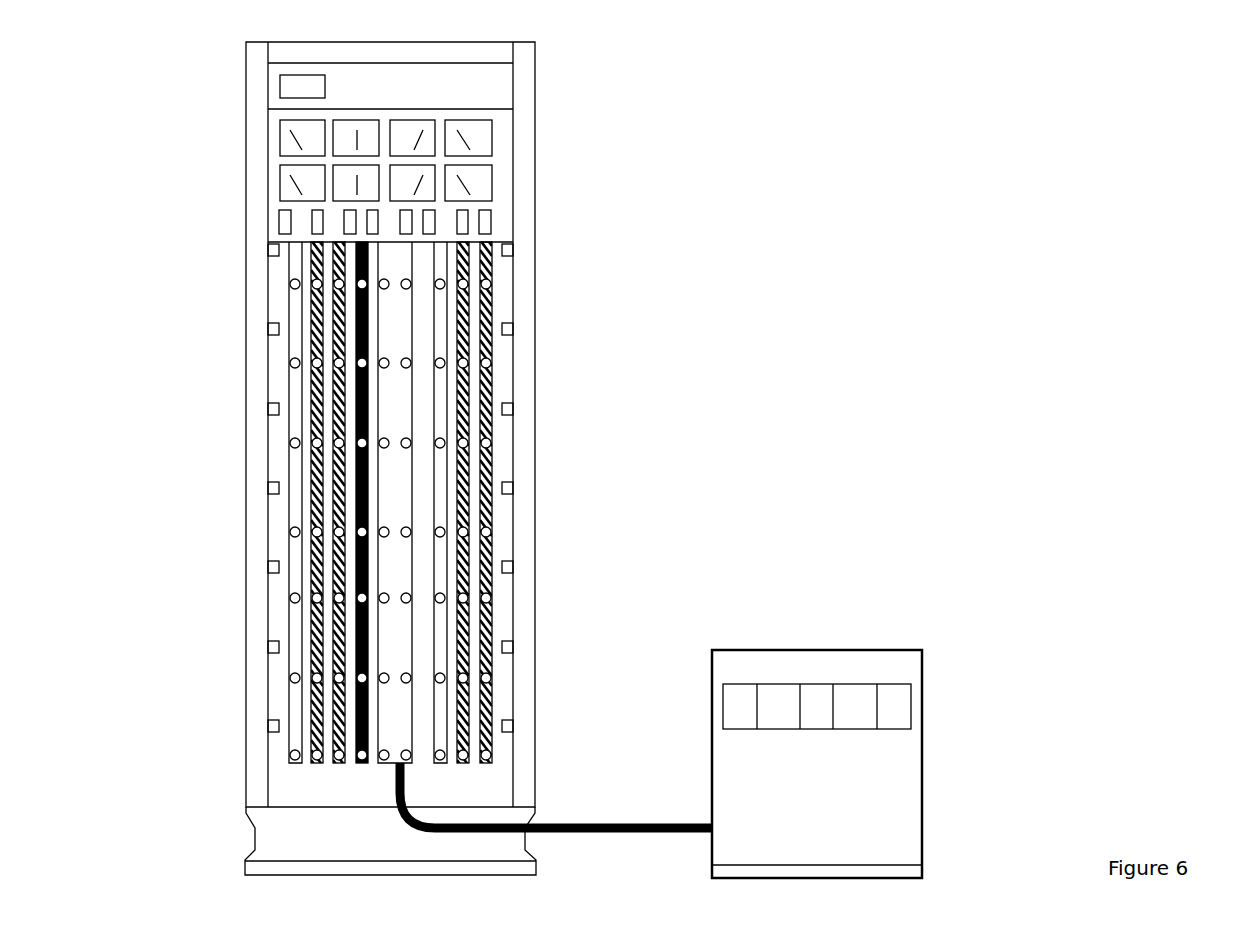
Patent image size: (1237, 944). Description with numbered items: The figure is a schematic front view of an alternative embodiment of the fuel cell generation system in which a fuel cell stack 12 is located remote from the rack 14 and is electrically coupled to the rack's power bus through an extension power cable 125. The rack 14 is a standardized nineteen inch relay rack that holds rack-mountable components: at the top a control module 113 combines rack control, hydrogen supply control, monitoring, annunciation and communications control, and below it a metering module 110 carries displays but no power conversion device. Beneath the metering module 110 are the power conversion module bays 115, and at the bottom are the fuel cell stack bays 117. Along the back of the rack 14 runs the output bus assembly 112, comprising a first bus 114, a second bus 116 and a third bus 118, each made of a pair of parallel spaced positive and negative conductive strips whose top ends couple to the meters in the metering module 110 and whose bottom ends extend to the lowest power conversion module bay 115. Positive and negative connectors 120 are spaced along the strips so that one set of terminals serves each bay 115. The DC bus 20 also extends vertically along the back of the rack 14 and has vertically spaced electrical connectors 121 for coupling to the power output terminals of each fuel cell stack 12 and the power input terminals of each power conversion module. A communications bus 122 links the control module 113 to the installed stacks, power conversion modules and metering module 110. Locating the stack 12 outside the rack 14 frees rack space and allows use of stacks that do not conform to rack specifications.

The fuel cell stack 12 is at (857, 650).
The rack 14 is at (525, 145).
The DC bus 20 is at (400, 582).
The metering module 110 is at (503, 213).
The output bus assembly 112 is at (311, 528).
The control module 113 is at (493, 88).
The first bus 114 is at (447, 347).
The power conversion module bays 115 is at (278, 447).
The second bus 116 is at (490, 382).
The fuel cell stack bays 117 is at (340, 773).
The third bus 118 is at (492, 467).
The positive and negative connectors 120 is at (442, 278).
The electrical connectors 121 is at (407, 762).
The communications bus 122 is at (368, 482).
The extension power cable 125 is at (636, 828).